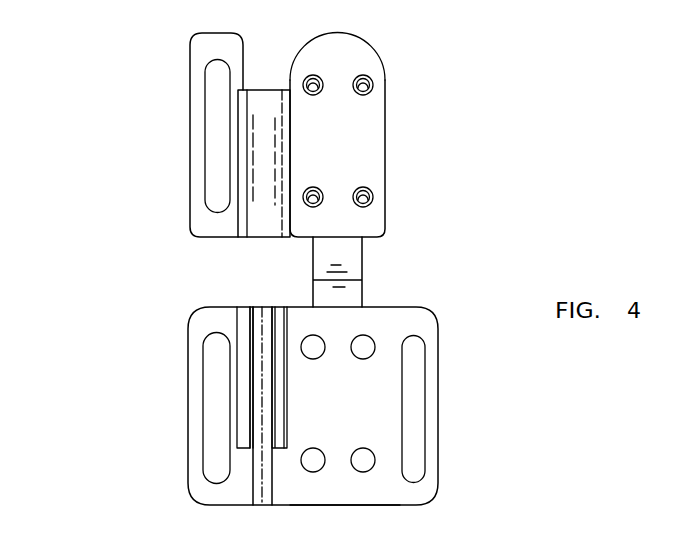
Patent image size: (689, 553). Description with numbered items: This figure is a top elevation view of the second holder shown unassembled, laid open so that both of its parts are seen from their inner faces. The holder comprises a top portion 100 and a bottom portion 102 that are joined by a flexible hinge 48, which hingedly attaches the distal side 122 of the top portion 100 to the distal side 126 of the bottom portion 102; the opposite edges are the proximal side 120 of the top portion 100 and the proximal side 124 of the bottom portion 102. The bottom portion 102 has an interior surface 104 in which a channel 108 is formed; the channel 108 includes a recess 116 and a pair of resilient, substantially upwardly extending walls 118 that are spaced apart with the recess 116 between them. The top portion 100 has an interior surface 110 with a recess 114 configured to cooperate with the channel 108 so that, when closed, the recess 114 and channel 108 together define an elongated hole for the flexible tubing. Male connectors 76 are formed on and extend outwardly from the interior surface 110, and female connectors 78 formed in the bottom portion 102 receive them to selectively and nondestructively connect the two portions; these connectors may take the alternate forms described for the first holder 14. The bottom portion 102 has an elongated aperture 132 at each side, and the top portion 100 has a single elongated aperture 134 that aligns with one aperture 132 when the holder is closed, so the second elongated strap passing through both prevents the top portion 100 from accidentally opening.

The first holder 14 is at (145, 222).
The flexible hinge 48 is at (350, 270).
The male connectors 76 is at (366, 80).
The female connectors 78 is at (366, 347).
The top portion 100 is at (358, 144).
The bottom portion 102 is at (384, 321).
The interior surface 104 is at (400, 492).
The channel 108 is at (262, 313).
The interior surface 110 is at (357, 45).
The recess 114 is at (268, 96).
The recess 116 is at (262, 495).
The resilient substantially upwardly extending walls 118 is at (218, 326).
The proximal side 120 is at (318, 34).
The distal side 122 is at (200, 237).
The proximal side 124 is at (342, 505).
The distal side 126 is at (282, 312).
The elongated apertures 132 is at (212, 430).
The elongated aperture 134 is at (212, 120).